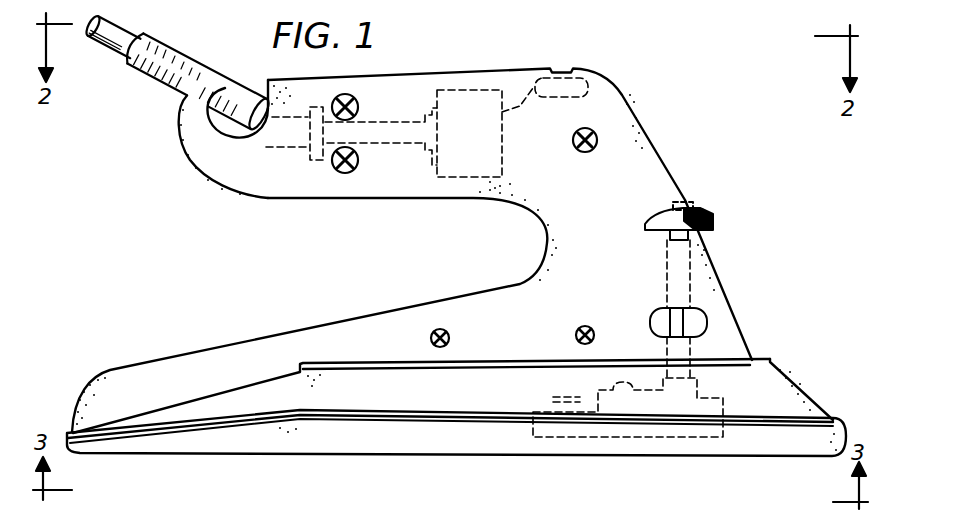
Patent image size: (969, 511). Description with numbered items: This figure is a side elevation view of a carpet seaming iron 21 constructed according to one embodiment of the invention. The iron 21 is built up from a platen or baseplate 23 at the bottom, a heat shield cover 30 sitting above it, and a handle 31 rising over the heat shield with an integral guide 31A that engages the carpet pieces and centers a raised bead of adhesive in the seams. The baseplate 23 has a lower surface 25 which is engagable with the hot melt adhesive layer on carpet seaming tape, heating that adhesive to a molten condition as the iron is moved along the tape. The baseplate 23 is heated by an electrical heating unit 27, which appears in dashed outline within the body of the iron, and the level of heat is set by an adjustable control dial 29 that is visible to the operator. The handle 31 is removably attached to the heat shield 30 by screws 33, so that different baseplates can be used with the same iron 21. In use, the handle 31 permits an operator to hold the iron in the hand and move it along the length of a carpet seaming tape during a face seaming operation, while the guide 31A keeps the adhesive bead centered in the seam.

The carpet seaming iron 21 is at (653, 60).
The baseplate 23 is at (376, 440).
The lower surface 25 is at (507, 455).
The electrical heating unit 27 is at (697, 393).
The adjustable control dial 29 is at (713, 217).
The heat shield cover 30 is at (784, 383).
The handle 31 is at (647, 140).
The integral guide 31A is at (317, 324).
The screws 33 is at (443, 330).